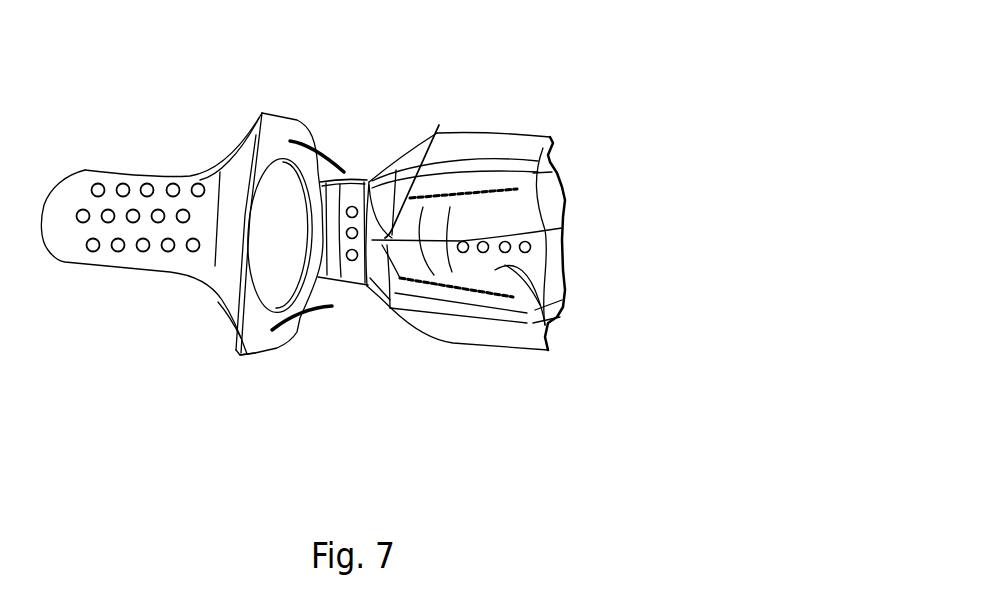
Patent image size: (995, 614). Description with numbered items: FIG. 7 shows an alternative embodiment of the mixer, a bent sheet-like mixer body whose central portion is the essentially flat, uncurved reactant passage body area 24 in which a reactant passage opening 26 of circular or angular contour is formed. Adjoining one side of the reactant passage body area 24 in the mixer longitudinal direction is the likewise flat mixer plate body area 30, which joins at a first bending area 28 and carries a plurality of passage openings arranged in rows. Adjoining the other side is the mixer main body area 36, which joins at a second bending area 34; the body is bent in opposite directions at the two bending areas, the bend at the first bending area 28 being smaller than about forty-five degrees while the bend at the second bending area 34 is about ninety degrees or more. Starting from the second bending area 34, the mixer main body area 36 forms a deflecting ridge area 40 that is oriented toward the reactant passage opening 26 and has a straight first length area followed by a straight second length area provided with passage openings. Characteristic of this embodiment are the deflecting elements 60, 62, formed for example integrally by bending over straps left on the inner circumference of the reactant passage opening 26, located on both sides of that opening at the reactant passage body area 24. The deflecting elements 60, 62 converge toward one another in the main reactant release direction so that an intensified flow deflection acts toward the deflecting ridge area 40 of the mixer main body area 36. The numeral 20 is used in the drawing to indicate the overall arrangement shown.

The oral care device 20 is at (546, 80).
The reactant passage body area 24 is at (283, 116).
The reactant passage opening 26 is at (273, 287).
The first bending area 28 is at (219, 292).
The mixer plate body area 30 is at (73, 263).
The second bending area 34 is at (348, 286).
The mixer main body area 36 is at (567, 210).
The deflecting ridge area 40 is at (439, 125).
The deflecting element 60 is at (330, 164).
The deflecting element 62 is at (321, 312).